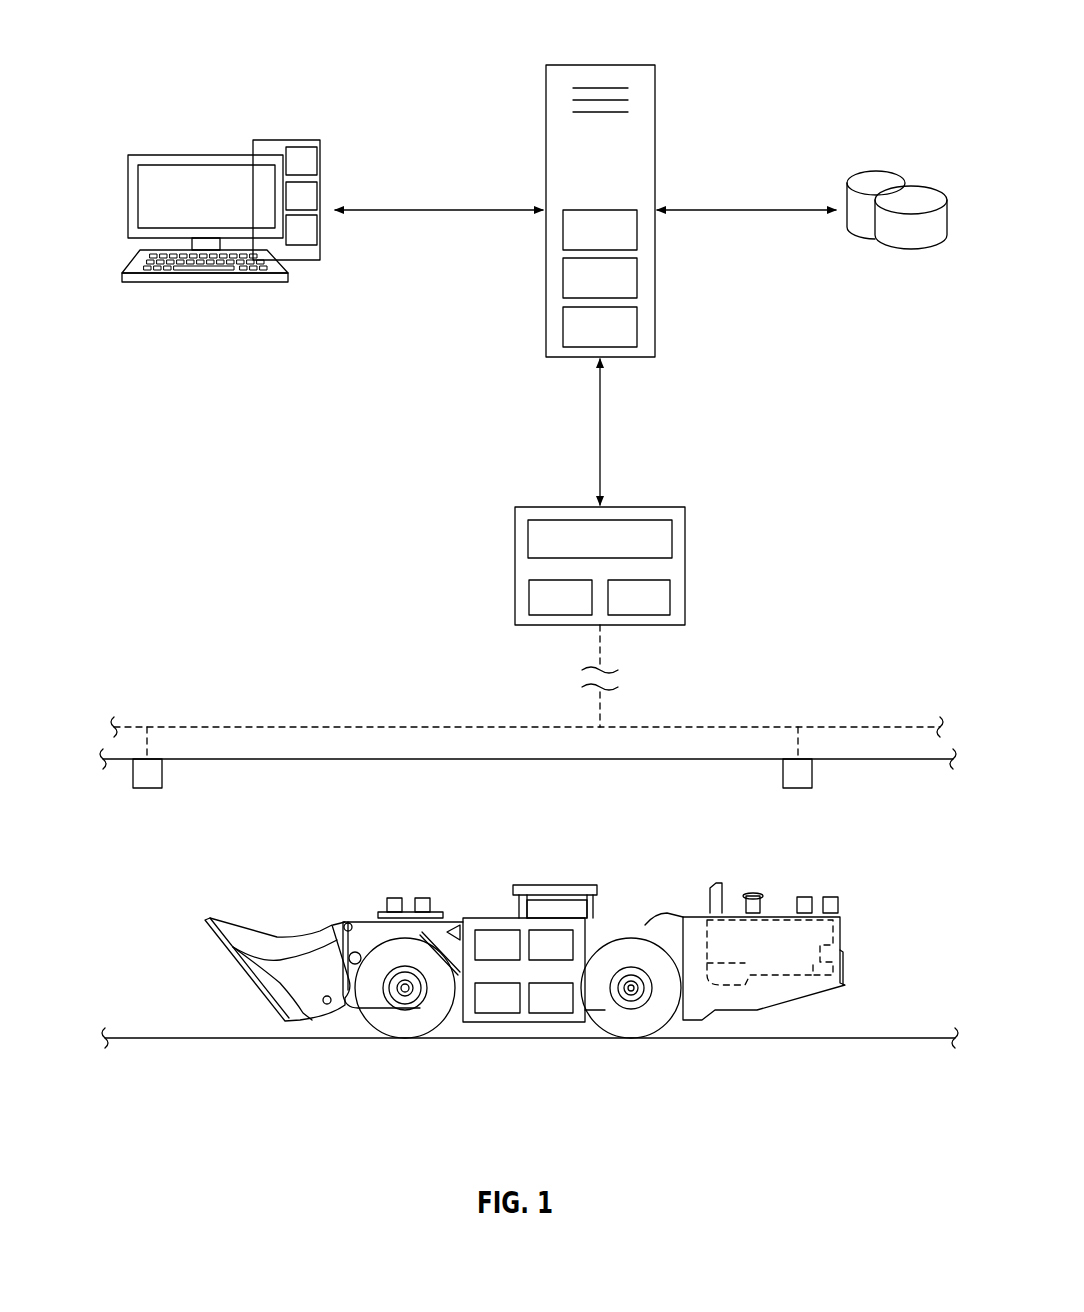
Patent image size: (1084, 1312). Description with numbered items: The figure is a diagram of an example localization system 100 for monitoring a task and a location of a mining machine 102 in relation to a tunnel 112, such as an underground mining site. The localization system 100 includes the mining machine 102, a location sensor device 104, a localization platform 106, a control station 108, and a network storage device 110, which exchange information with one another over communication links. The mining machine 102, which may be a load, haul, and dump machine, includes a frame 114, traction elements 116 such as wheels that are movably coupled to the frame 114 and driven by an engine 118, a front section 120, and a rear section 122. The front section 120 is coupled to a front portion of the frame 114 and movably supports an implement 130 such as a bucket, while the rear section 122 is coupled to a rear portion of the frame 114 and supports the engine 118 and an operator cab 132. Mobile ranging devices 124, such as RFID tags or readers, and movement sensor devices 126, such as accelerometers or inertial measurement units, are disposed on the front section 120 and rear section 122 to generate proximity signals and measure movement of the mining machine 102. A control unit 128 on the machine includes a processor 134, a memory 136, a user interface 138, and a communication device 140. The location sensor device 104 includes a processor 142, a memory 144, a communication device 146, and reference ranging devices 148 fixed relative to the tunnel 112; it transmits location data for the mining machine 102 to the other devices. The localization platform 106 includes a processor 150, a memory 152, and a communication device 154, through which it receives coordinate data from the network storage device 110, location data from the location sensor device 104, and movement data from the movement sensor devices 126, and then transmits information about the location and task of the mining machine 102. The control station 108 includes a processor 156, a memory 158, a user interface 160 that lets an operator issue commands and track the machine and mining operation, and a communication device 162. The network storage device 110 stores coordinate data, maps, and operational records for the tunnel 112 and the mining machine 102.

The localization system 100 is at (143, 40).
The mining machine 102 is at (642, 852).
The location sensor device 104 is at (673, 507).
The localization platform 106 is at (643, 65).
The control station 108 is at (262, 140).
The network storage device 110 is at (878, 170).
The tunnel 112 is at (110, 897).
The frame 114 is at (730, 1012).
The traction elements 116 is at (402, 1022).
The engine 118 is at (775, 952).
The front section 120 is at (445, 918).
The rear section 122 is at (842, 952).
The mobile ranging device 124 is at (387, 902).
The movement sensor device 126 is at (417, 898).
The control unit 128 is at (520, 1020).
The implement 130 is at (252, 980).
The operator cab 132 is at (555, 885).
The processor 134 is at (511, 955).
The memory 136 is at (565, 955).
The user interface 138 is at (511, 1008).
The communication device 140 is at (565, 1008).
The processor 142 is at (613, 550).
The memory 144 is at (574, 608).
The communication device 146 is at (652, 608).
The reference ranging devices 148 is at (150, 775).
The processor 150 is at (613, 241).
The memory 152 is at (613, 289).
The communication device 154 is at (613, 338).
The processor 156 is at (302, 160).
The memory 158 is at (302, 195).
The user interface 160 is at (112, 167).
The communication device 162 is at (302, 230).